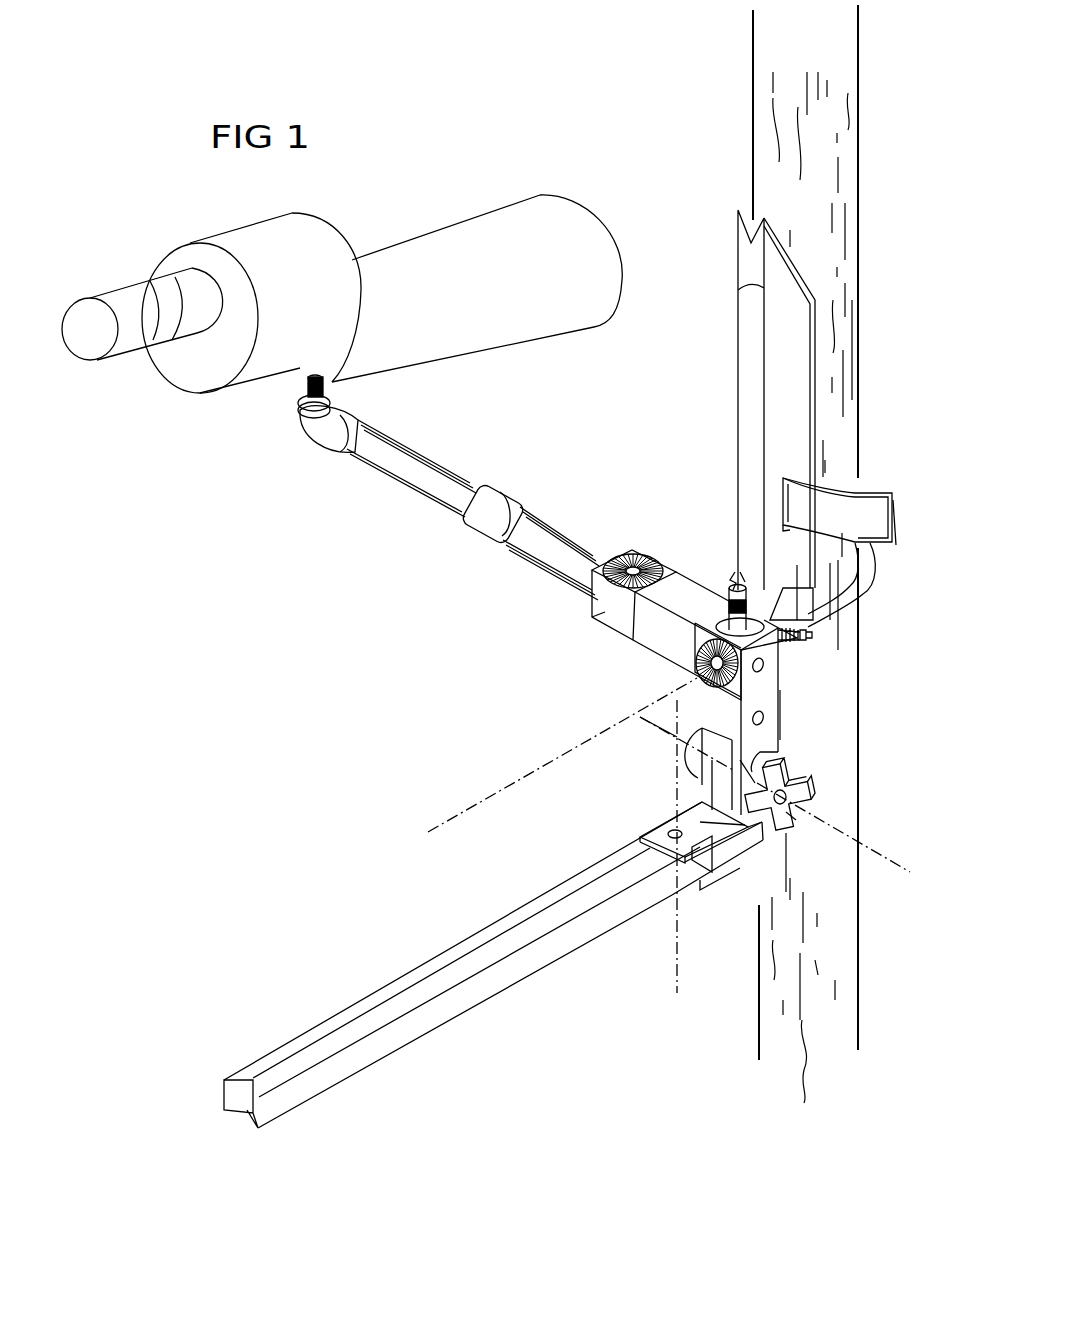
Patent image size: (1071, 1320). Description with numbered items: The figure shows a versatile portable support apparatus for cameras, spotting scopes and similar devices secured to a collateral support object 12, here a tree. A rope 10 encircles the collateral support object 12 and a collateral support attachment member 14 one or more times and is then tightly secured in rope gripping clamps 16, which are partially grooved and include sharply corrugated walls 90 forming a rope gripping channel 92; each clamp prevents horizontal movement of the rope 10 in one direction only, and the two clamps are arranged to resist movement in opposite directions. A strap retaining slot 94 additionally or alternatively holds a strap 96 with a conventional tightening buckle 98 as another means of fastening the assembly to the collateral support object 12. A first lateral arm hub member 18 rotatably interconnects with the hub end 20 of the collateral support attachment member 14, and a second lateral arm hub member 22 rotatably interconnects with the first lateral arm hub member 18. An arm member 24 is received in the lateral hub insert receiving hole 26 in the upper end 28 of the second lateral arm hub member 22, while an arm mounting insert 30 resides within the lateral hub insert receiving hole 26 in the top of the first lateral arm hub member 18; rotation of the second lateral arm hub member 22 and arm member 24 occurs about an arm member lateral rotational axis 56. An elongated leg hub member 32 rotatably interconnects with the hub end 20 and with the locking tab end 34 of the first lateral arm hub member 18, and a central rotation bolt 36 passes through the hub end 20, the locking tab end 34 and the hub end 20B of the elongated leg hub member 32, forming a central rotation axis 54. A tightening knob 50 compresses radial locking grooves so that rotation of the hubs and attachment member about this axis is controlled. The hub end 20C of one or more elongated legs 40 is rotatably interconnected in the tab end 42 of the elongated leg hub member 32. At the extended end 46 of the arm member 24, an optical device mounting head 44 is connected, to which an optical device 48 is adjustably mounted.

The rope 10 is at (858, 593).
The collateral support object 12 is at (770, 138).
The collateral support attachment member 14 is at (752, 412).
The rope gripping clamps 16 is at (797, 634).
The first lateral arm hub member 18 is at (763, 733).
The hub end 20 is at (803, 767).
The hub end 20B is at (722, 783).
The hub end 20C is at (645, 888).
The second lateral arm hub member 22 is at (673, 642).
The arm member 24 is at (552, 548).
The lateral hub insert receiving hole 26 is at (717, 640).
The upper end 28 is at (613, 610).
The arm mounting insert 30 is at (735, 583).
The elongated leg hub member 32 is at (700, 822).
The locking tab end 34 is at (697, 748).
The central rotation bolt 36 is at (800, 803).
The elongated legs 40 is at (428, 1023).
The tab end 42 is at (640, 835).
The optical device mounting head 44 is at (318, 427).
The extended end 46 is at (407, 462).
The optical device 48 is at (482, 247).
The tightening knob 50 is at (793, 817).
The central rotation axis 54 is at (640, 717).
The arm member lateral rotational axis 56 is at (548, 835).
The sharply corrugated walls 90 is at (805, 637).
The rope gripping channel 92 is at (800, 632).
The strap retaining slot 94 is at (790, 478).
The strap 96 is at (820, 523).
The tightening buckle 98 is at (890, 522).